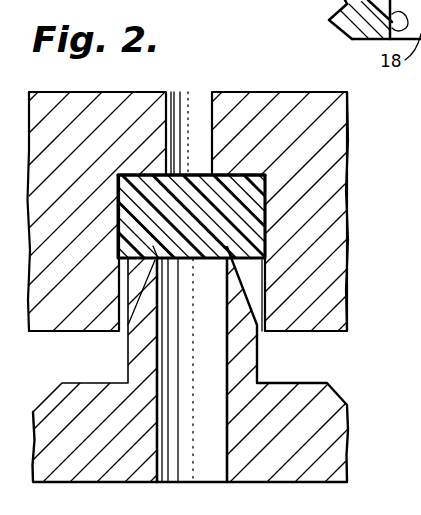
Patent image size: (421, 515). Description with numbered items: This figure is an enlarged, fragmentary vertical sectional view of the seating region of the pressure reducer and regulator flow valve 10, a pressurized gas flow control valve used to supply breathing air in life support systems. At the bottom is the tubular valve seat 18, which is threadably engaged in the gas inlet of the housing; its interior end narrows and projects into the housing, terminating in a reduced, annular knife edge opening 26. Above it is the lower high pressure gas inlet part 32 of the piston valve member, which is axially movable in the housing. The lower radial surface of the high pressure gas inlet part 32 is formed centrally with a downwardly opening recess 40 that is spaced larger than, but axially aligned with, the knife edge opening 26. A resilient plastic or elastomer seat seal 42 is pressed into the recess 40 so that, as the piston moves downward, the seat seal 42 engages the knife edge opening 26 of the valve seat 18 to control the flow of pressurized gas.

The pressure reducer and regulator flow valve 10 is at (245, 85).
The tubular valve seat 18 is at (331, 402).
The knife edge opening 26 is at (231, 271).
The high pressure gas inlet part 32 is at (293, 100).
The downwardly opening recess 40 is at (258, 230).
The seat seal 42 is at (257, 195).